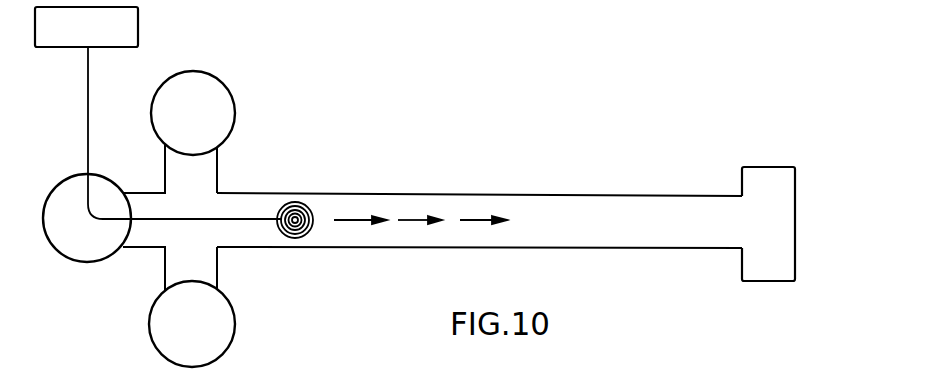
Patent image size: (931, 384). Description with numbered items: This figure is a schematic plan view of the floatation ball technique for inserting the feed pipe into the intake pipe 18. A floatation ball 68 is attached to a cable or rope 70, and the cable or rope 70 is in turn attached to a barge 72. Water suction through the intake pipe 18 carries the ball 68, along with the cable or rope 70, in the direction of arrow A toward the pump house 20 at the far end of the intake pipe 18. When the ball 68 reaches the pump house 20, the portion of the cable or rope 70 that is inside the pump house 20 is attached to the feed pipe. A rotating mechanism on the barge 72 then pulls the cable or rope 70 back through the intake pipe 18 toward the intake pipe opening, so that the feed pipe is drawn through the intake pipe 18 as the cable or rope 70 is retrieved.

The intake pipe 18 is at (573, 205).
The pump house 20 is at (765, 178).
The floatation ball 68 is at (302, 198).
The cable or rope 70 is at (140, 218).
The barge 72 is at (130, 30).
The arrow A is at (357, 218).